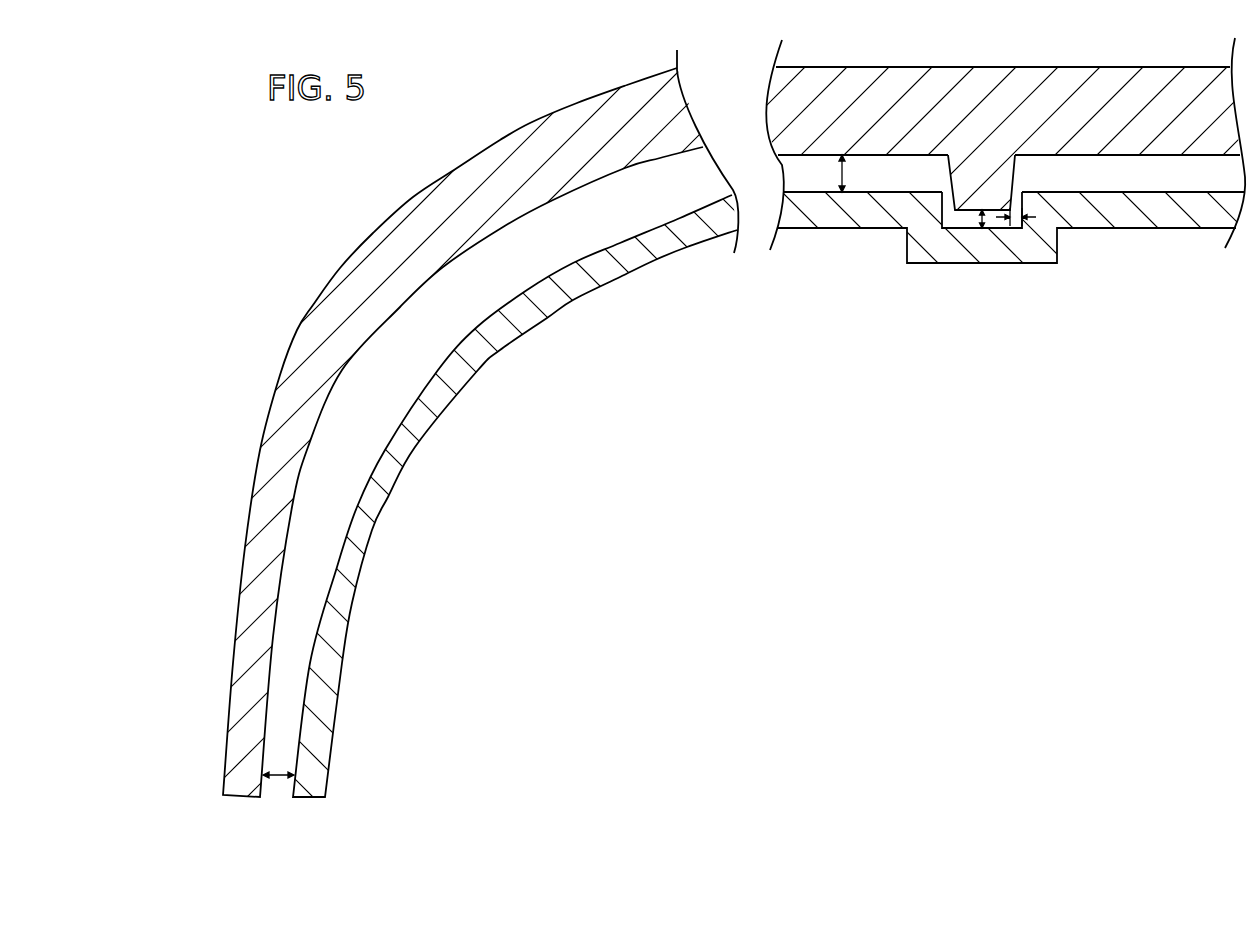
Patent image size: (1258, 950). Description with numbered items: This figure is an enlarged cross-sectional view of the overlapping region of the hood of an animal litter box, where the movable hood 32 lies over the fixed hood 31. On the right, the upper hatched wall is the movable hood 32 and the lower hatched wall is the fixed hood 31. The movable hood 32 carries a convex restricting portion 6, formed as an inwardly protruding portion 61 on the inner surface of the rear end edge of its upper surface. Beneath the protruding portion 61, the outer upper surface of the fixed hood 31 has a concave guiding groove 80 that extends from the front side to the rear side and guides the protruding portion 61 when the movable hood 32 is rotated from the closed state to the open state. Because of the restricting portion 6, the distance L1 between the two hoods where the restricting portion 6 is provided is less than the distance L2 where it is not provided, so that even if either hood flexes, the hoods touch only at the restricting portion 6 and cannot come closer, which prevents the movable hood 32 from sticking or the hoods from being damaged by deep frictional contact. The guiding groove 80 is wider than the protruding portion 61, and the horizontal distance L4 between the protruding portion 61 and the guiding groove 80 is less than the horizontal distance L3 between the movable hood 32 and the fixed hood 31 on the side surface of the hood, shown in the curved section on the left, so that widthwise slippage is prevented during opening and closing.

The movable hood 32 is at (855, 73).
The fixed hood 31 is at (827, 226).
The protruding portion 61 is at (1027, 182).
The restricting portion 6 is at (1014, 178).
The guiding groove 80 is at (960, 224).
The distance where the restricting portion is provided L1 is at (983, 221).
The distance where the restricting portion is not provided L2 is at (860, 173).
The horizontal distance between movable hood and fixed hood on the side surface L3 is at (277, 772).
The horizontal distance between protruding portion and guiding groove L4 is at (1020, 226).